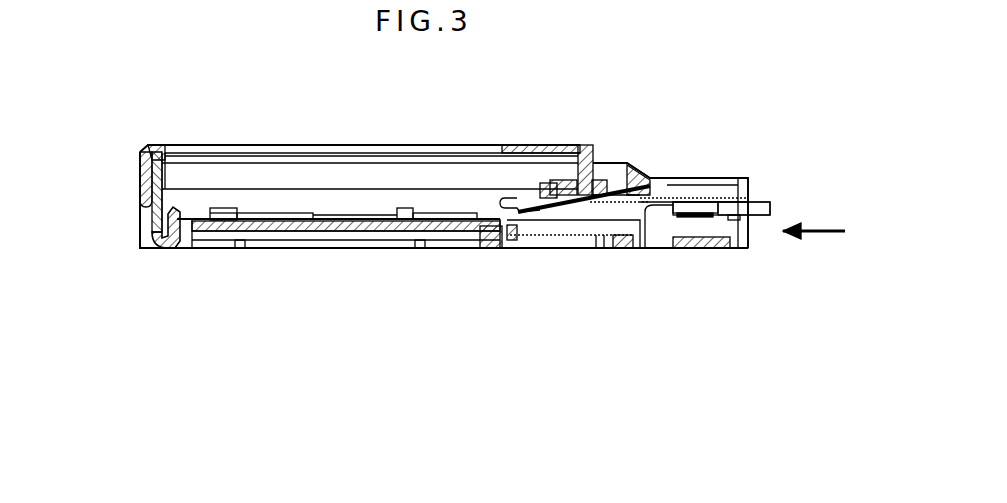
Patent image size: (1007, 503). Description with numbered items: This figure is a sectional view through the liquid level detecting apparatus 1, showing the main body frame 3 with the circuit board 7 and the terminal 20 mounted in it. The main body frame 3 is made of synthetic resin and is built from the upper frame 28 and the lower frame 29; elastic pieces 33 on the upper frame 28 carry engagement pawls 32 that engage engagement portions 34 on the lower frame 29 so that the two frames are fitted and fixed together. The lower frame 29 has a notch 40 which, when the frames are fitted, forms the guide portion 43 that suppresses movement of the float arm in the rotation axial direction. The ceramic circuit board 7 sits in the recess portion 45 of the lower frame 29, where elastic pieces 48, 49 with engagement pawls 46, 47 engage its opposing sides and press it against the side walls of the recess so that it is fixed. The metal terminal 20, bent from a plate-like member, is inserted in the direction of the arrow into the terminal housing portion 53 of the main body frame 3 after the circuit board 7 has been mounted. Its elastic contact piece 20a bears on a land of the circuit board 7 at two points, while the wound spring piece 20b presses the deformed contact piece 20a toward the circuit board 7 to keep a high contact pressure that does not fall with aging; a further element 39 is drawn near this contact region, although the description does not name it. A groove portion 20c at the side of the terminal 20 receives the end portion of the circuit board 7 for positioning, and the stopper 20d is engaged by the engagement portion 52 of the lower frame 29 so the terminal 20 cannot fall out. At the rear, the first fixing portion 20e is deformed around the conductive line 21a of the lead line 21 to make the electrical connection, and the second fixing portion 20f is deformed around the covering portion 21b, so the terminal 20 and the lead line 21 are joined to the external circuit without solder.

The liquid level detecting apparatus 1 is at (313, 142).
The main body frame 3 is at (598, 146).
The circuit board 7 is at (375, 215).
The terminal 20 is at (575, 249).
The contact piece 20a is at (545, 182).
The spring piece 20b is at (520, 183).
The groove portion 20c is at (518, 246).
The stopper 20d is at (636, 165).
The first fixing portion 20e is at (698, 250).
The second fixing portion 20f is at (733, 250).
The lead line 21 is at (777, 194).
The conductive line 21a is at (702, 212).
The covering portion 21b is at (750, 202).
The upper frame 28 is at (158, 147).
The lower frame 29 is at (312, 249).
The engagement pawl 32 is at (142, 203).
The elastic piece 33 is at (140, 175).
The engagement portion 34 is at (194, 165).
The contact spring 39 is at (503, 198).
The notch 40 is at (322, 162).
The guide portion 43 is at (425, 213).
The recess portion 45 is at (405, 249).
The engagement pawl 46 is at (230, 208).
The engagement pawl 47 is at (250, 218).
The elastic piece 48 is at (150, 250).
The elastic piece 49 is at (240, 249).
The engagement portion 52 is at (680, 178).
The terminal housing portion 53 is at (652, 252).